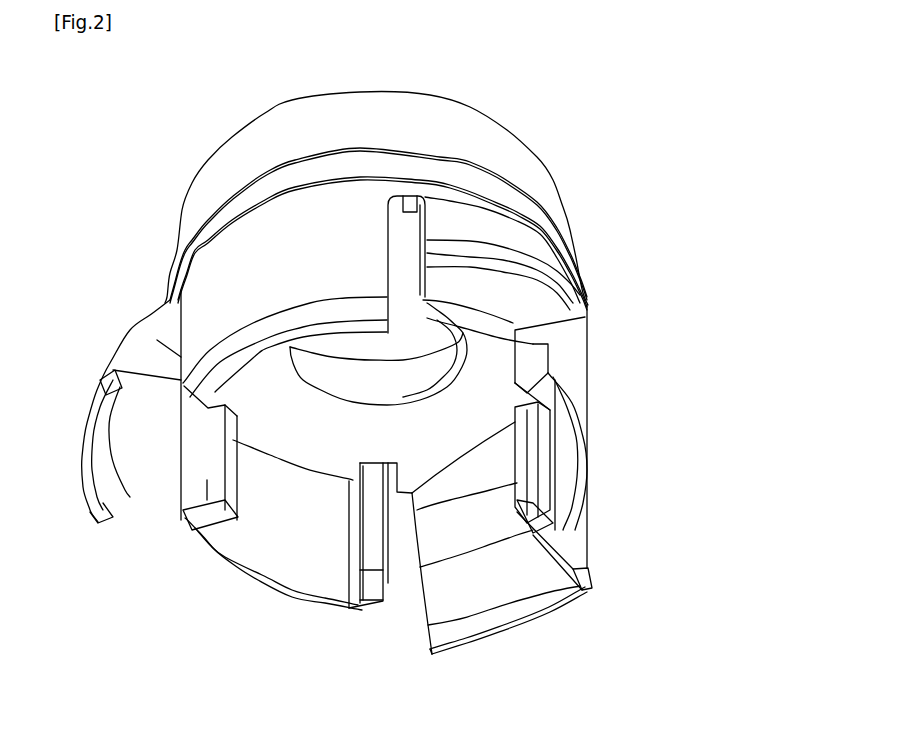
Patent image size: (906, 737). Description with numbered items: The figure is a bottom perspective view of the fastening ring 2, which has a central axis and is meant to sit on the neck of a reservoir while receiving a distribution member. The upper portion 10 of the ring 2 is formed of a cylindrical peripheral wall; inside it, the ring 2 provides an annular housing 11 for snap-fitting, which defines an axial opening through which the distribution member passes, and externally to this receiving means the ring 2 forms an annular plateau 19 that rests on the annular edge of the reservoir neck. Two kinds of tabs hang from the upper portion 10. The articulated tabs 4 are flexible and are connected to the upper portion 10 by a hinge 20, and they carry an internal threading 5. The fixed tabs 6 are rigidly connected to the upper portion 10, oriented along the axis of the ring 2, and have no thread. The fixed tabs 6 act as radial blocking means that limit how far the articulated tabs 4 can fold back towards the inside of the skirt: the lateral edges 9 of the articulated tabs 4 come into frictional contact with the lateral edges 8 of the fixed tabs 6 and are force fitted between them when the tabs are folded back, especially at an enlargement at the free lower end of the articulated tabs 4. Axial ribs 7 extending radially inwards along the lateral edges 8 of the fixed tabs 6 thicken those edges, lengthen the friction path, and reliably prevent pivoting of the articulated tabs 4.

The fastening ring 2 is at (705, 134).
The articulated tabs 4 is at (567, 280).
The internal threading 5 is at (132, 457).
The fixed tabs 6 is at (285, 243).
The axial ribs 7 is at (203, 492).
The lateral edges of the fixed tabs 8 is at (182, 487).
The lateral edges of the articulated tabs 9 is at (419, 612).
The upper portion 10 is at (197, 211).
The annular housing 11 is at (590, 320).
The annular plateau 19 is at (445, 416).
The hinge 20 is at (457, 220).